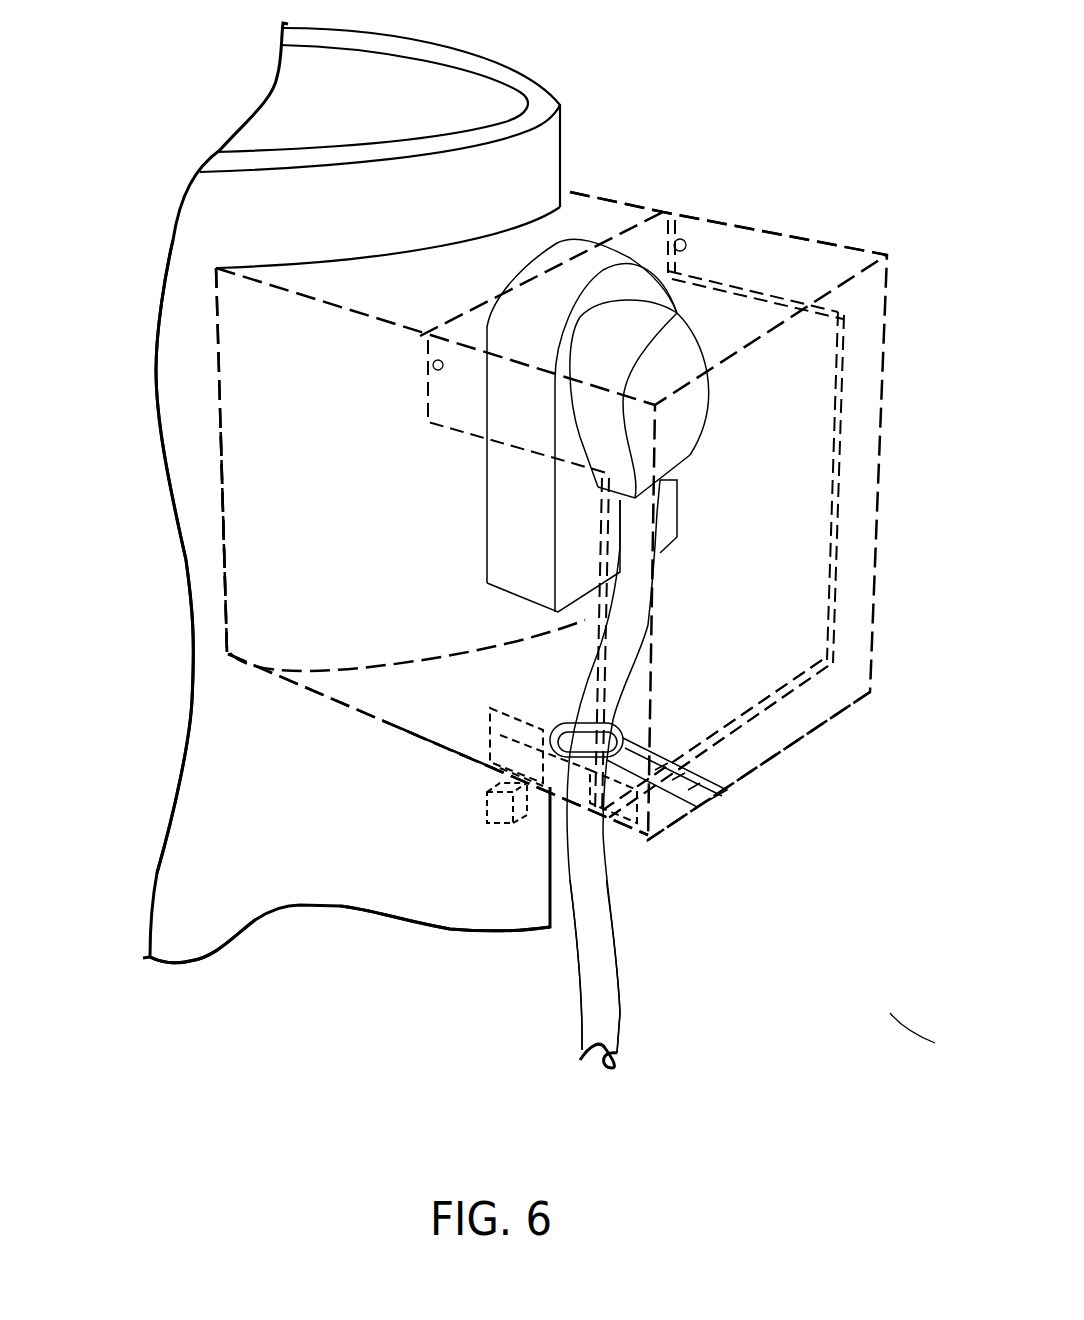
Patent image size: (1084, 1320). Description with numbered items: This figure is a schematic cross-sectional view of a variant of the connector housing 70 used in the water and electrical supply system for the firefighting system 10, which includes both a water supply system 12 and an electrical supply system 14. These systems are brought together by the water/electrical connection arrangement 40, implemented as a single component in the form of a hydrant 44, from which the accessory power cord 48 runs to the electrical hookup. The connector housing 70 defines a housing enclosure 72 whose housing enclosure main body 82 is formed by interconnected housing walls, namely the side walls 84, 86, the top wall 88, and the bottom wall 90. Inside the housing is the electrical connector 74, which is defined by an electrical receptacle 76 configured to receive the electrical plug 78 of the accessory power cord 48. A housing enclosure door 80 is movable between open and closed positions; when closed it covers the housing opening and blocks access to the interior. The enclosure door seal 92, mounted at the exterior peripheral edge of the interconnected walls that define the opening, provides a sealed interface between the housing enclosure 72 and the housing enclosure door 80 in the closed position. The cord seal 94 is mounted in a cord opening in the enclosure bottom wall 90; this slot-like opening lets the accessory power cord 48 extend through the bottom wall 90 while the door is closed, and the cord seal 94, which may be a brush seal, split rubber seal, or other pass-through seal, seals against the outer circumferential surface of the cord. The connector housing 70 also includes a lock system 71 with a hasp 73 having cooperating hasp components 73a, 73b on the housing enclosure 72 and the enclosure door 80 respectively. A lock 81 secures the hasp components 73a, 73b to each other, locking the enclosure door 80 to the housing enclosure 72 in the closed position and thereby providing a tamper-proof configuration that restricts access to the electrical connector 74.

The firefighting system 10 is at (356, 1050).
The water supply system 12 is at (162, 988).
The electrical supply system 14 is at (675, 1041).
The water/electrical connection arrangement 40 is at (130, 855).
The hydrant 44 is at (205, 768).
The accessory power cord 48 is at (924, 1046).
The connector housing 70 is at (172, 282).
The lock system 71 is at (466, 772).
The housing enclosure 72 is at (208, 372).
The hasp 73 is at (486, 753).
The hasp component 73a is at (490, 727).
The hasp component 73b is at (565, 775).
The electrical connector 74 is at (730, 426).
The electrical receptacle 76 is at (680, 477).
The electrical plug 78 is at (805, 942).
The housing enclosure door 80 is at (718, 108).
The lock 81 is at (486, 803).
The housing enclosure main body 82 is at (203, 486).
The side wall 84 is at (342, 578).
The side wall 86 is at (797, 557).
The top wall 88 is at (383, 282).
The bottom wall 90 is at (822, 658).
The enclosure door seal 92 is at (600, 565).
The cord seal 94 is at (750, 732).